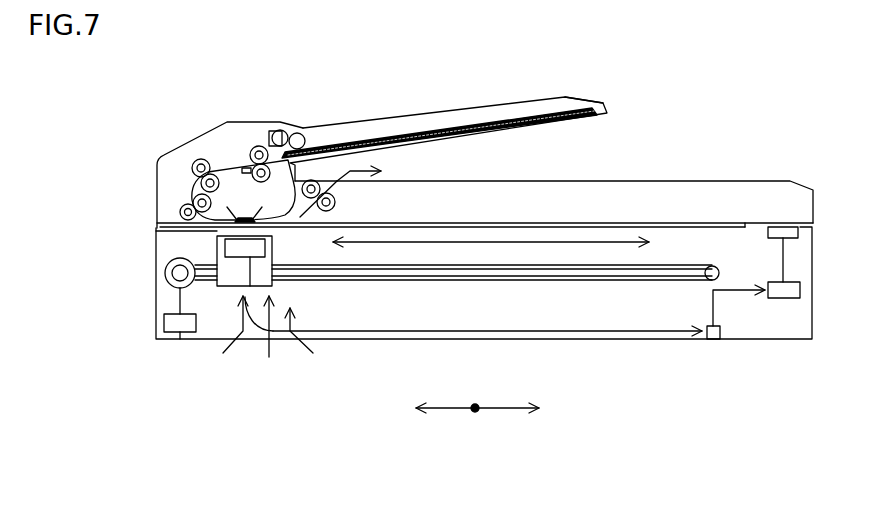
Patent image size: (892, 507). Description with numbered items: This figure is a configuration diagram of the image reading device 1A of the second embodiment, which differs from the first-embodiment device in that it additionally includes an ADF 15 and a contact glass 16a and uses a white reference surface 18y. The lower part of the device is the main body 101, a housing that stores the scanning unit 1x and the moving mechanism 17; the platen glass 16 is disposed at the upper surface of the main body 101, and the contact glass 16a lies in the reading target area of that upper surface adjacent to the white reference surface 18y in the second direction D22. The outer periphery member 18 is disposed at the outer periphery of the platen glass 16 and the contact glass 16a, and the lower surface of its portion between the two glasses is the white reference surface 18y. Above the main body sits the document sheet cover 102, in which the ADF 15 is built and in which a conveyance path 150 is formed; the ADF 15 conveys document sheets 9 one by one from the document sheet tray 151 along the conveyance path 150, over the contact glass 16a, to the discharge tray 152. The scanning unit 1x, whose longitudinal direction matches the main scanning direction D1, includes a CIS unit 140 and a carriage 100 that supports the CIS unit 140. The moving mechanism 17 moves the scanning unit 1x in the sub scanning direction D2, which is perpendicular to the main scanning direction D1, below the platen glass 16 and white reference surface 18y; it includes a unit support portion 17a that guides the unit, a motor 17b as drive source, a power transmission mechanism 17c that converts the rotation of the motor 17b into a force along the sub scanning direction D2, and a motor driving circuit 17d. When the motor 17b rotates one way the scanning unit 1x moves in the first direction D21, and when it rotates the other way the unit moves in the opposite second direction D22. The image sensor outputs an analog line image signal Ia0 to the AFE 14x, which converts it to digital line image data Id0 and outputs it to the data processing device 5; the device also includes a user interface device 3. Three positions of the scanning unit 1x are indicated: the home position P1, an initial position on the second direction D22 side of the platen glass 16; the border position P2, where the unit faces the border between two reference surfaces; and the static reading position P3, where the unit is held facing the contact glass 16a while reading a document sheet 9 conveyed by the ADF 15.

The image reading device 1A is at (772, 92).
The document sheet cover 102 is at (187, 193).
The document sheet 9 is at (468, 123).
The document sheet tray 151 is at (605, 103).
The discharge tray 152 is at (562, 182).
The ADF 15 is at (190, 147).
The conveyance path 150 is at (188, 192).
The platen glass 16 is at (676, 222).
The contact glass 16a is at (175, 225).
The outer periphery member 18 is at (755, 227).
The white reference surface 18y is at (337, 240).
The user interface device 3 is at (800, 228).
The data processing device 5 is at (790, 282).
The AFE 14x is at (722, 332).
The line image data Id0 is at (734, 306).
The line image signal Ia0 is at (487, 318).
The main body 101 is at (156, 300).
The carriage 100 is at (217, 237).
The scanning unit 1x is at (211, 249).
The CIS unit 140 is at (253, 257).
The unit support portion 17a is at (328, 272).
The power transmission mechanism 17c is at (430, 278).
The moving mechanism 17 is at (724, 271).
The motor 17b is at (165, 273).
The motor driving circuit 17d is at (180, 339).
The home position P1 is at (268, 343).
The border position P2 is at (310, 349).
The static reading position P3 is at (241, 343).
The main scanning direction D1 is at (472, 407).
The sub scanning direction D2 is at (421, 420).
The first direction D21 is at (531, 408).
The second direction D22 is at (417, 408).